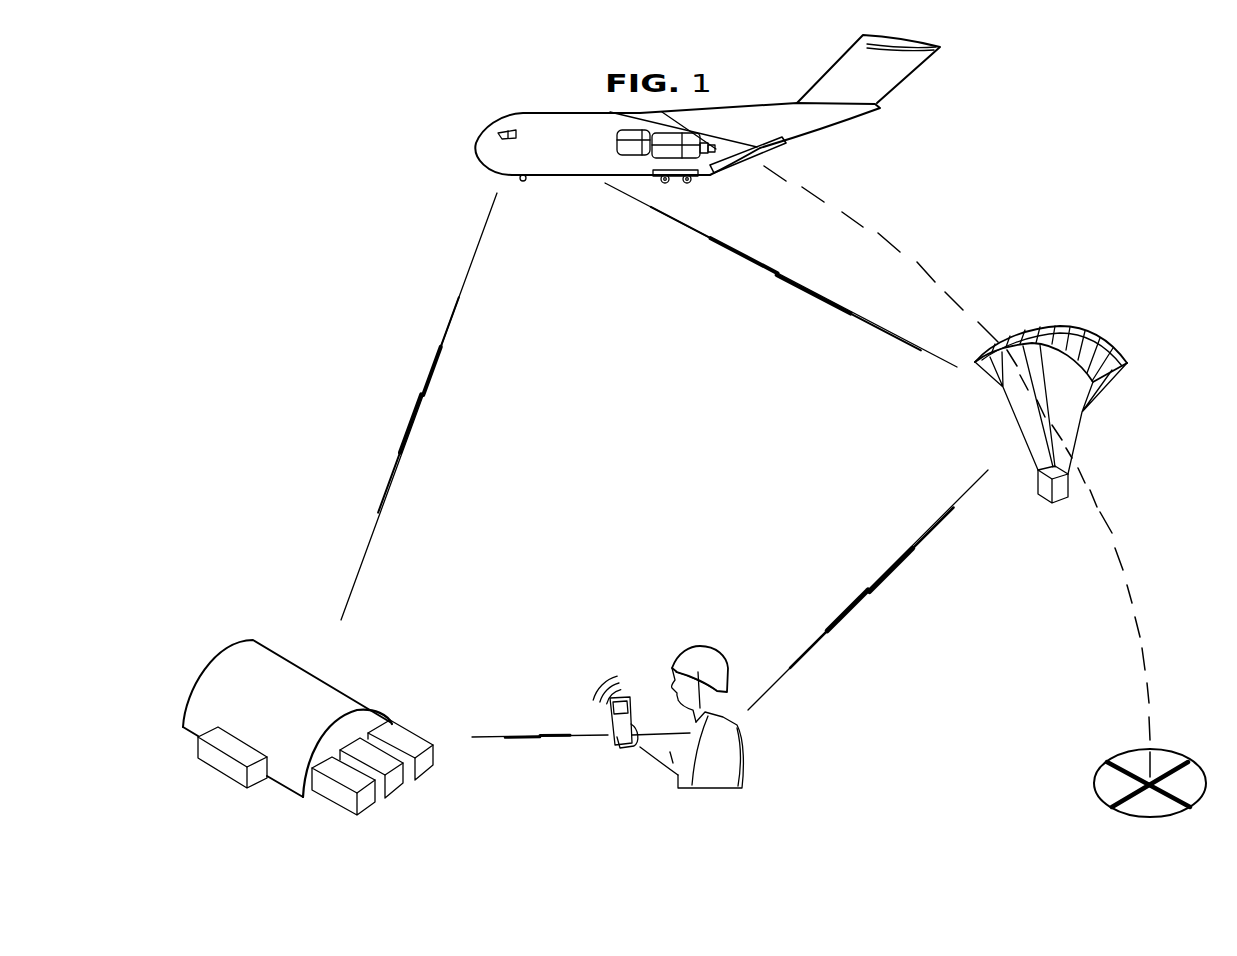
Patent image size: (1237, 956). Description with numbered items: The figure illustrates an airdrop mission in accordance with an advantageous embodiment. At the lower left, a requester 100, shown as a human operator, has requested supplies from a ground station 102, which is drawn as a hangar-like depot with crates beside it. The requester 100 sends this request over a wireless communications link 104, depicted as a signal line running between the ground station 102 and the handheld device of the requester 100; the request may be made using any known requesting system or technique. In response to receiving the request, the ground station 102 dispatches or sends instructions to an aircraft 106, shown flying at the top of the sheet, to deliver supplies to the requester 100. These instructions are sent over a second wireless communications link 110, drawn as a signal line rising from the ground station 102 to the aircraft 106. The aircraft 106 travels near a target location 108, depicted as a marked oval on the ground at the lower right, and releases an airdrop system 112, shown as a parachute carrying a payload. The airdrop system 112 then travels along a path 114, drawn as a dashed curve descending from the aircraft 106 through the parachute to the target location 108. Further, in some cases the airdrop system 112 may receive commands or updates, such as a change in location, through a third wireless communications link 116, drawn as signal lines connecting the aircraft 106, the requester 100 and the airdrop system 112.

The requester 100 is at (745, 757).
The ground station 102 is at (223, 778).
The wireless communications link 104 is at (507, 739).
The aircraft 106 is at (538, 113).
The target location 108 is at (1148, 818).
The wireless communications link 110 is at (455, 304).
The airdrop system 112 is at (1085, 433).
The path 114 is at (912, 260).
The wireless communications link 116 is at (818, 293).